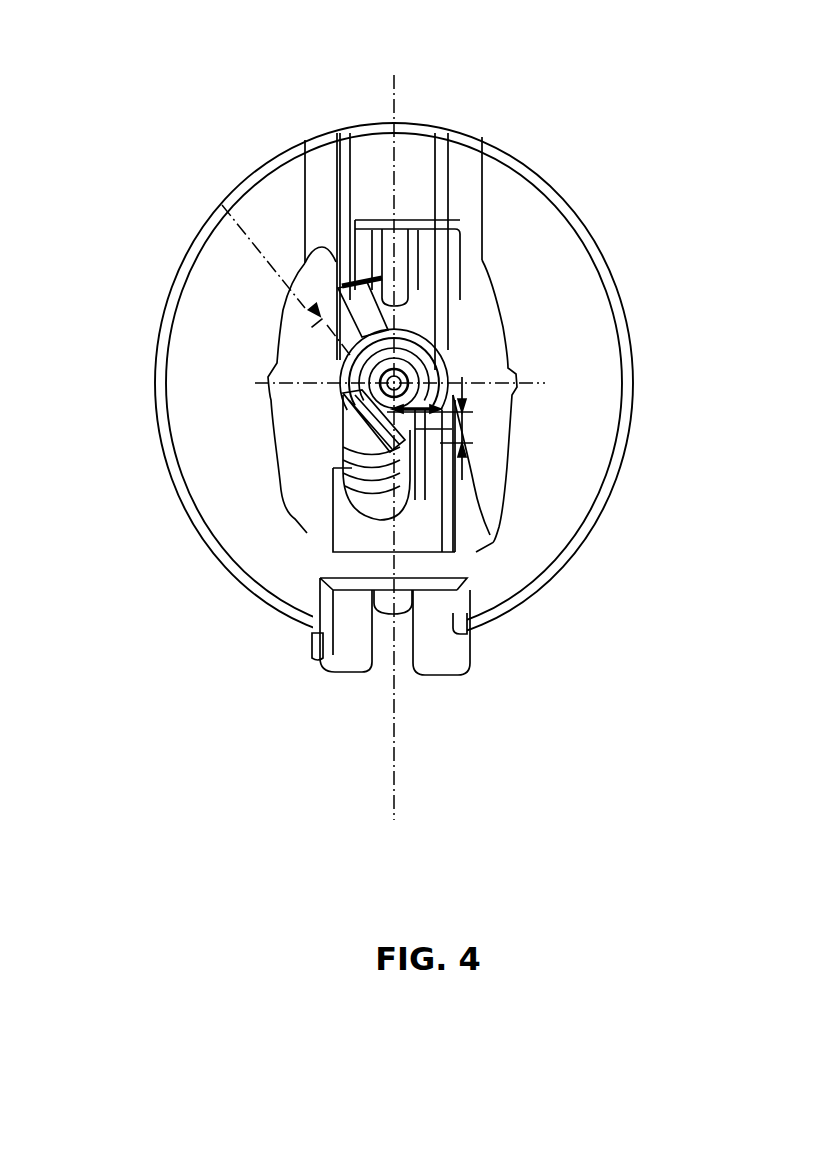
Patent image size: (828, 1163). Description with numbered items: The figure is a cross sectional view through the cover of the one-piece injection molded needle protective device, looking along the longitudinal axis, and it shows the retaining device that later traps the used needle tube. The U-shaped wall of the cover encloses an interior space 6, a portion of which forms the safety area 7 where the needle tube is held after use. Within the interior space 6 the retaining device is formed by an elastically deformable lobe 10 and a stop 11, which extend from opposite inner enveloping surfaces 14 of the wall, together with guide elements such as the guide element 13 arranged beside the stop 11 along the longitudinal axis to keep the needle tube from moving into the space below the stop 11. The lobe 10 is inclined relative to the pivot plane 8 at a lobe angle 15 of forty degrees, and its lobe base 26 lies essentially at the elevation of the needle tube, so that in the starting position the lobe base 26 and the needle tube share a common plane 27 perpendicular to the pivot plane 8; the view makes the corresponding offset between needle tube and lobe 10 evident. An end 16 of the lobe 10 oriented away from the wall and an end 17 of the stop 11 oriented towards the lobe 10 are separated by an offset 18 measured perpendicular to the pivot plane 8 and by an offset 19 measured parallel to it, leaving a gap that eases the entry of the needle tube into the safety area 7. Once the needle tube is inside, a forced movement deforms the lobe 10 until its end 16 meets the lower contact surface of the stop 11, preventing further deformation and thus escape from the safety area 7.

The interior space 6 is at (367, 507).
The safety area 7 is at (460, 623).
The pivot plane 8 is at (393, 747).
The lobe 10 is at (350, 425).
The stop 11 is at (420, 405).
The guide element 13 is at (440, 460).
The inner enveloping surfaces 14 is at (388, 328).
The lobe angle 15 is at (348, 268).
The end of the lobe 16 is at (407, 427).
The end of the stop 17 is at (410, 405).
The offset 18 is at (412, 395).
The offset 19 is at (463, 428).
The lobe base 26 is at (341, 390).
The common plane 27 is at (487, 383).